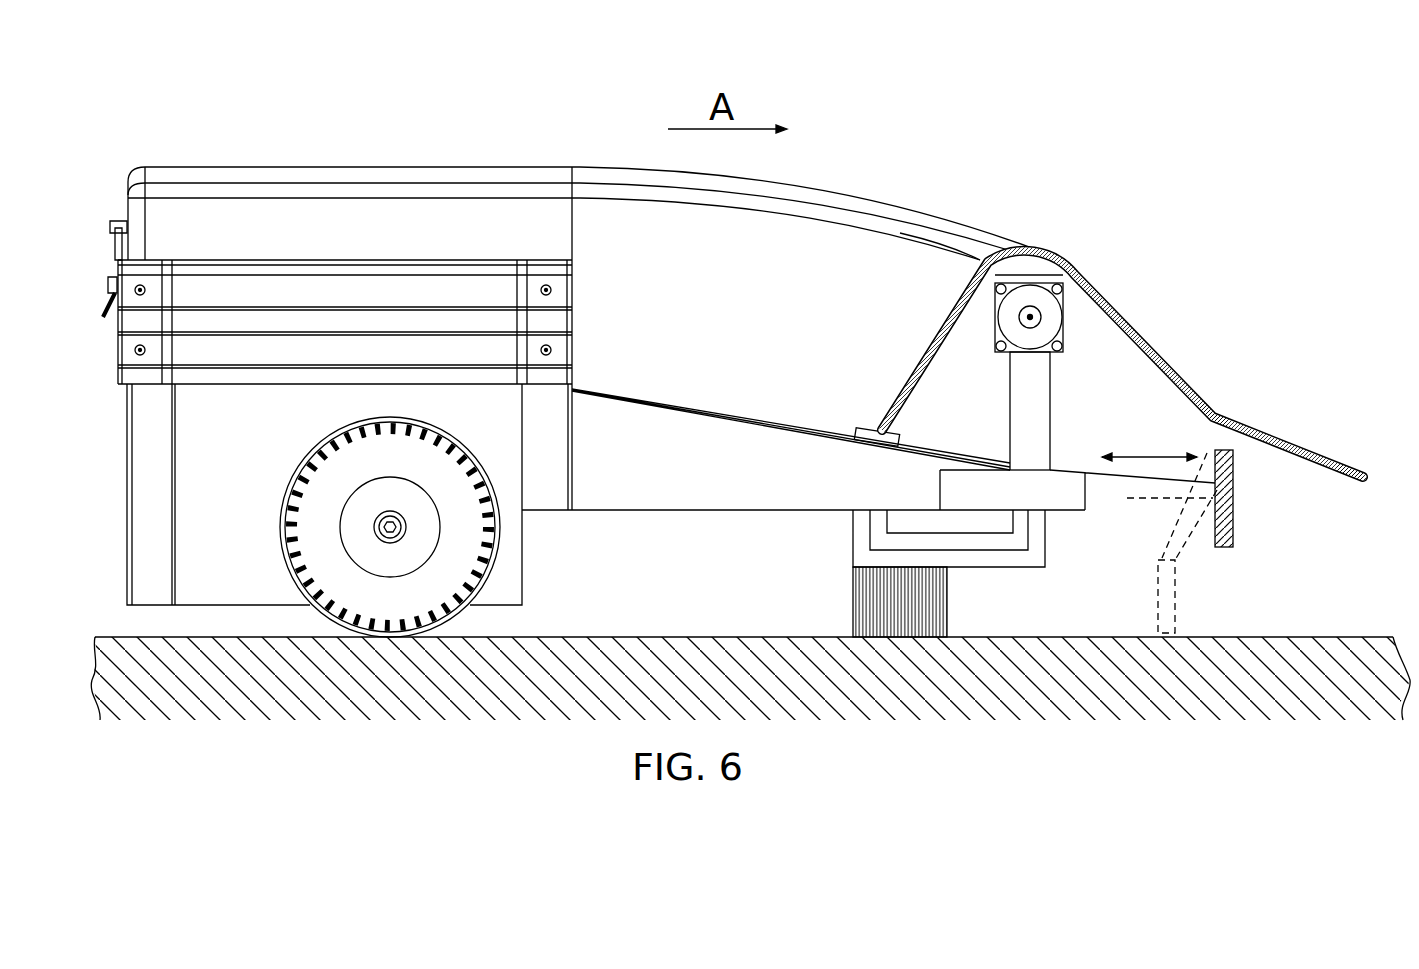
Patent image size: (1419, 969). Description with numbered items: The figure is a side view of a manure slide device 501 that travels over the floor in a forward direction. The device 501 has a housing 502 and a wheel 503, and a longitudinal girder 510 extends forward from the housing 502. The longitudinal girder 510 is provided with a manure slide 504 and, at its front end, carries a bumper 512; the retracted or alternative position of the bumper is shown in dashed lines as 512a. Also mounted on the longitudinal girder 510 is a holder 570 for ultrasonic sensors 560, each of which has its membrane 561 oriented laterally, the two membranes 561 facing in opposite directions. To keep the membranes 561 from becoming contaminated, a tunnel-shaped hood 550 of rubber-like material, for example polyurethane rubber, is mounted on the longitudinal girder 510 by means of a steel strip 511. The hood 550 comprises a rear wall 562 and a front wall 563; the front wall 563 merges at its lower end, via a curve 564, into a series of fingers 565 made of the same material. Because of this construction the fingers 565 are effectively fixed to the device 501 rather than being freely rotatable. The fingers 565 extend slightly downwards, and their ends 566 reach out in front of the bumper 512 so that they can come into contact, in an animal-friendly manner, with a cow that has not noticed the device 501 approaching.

The manure slide device 501 is at (378, 148).
The housing 502 is at (280, 445).
The wheel 503 is at (425, 615).
The manure slide 504 is at (935, 618).
The longitudinal girder 510 is at (647, 418).
The steel strip 511 is at (885, 440).
The bumper 512 is at (1230, 517).
The retracted stopper position 512a is at (1167, 617).
The tunnel-shaped hood 550 is at (930, 345).
The ultrasonic sensor 560 is at (1045, 302).
The membrane 561 is at (1030, 317).
The rear wall 562 is at (987, 257).
The front wall 563 is at (1093, 273).
The curve 564 is at (1217, 417).
The fingers 565 is at (1248, 425).
The ends of the fingers 566 is at (1320, 467).
The holder 570 is at (1035, 395).